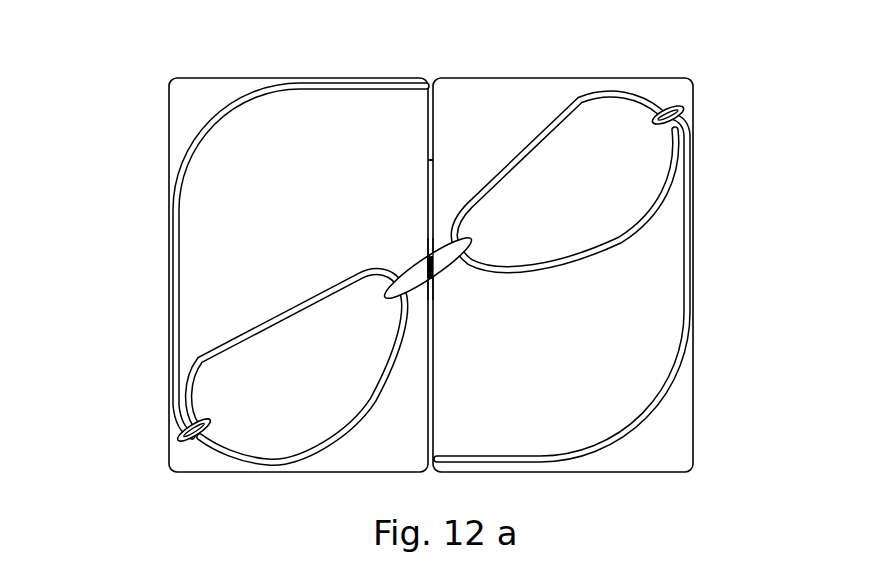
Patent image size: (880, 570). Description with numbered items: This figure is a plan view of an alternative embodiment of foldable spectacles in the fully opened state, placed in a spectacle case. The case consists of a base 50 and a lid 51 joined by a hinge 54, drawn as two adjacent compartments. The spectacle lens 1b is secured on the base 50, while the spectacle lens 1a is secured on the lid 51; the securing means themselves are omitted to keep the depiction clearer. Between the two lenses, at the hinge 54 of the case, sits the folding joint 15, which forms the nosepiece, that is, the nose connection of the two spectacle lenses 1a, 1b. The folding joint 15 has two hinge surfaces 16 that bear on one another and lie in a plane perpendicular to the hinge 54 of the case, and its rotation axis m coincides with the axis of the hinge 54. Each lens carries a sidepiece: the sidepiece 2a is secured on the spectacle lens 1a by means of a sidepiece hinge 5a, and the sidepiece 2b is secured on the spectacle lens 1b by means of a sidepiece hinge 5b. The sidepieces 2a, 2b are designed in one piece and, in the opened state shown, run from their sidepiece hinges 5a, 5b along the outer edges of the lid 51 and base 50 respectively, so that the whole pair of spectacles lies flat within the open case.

The base 50 is at (200, 93).
The lid 51 is at (672, 453).
The sidepiece 2b is at (200, 141).
The sidepiece 2a is at (660, 398).
The spectacle lens 1b is at (257, 352).
The spectacle lens 1a is at (620, 195).
The sidepiece hinge 5b is at (180, 437).
The sidepiece hinge 5a is at (690, 113).
The folding joint 15 is at (428, 262).
The hinge surfaces 16 is at (435, 270).
The rotation axis m is at (435, 273).
The hinge 54 is at (433, 173).